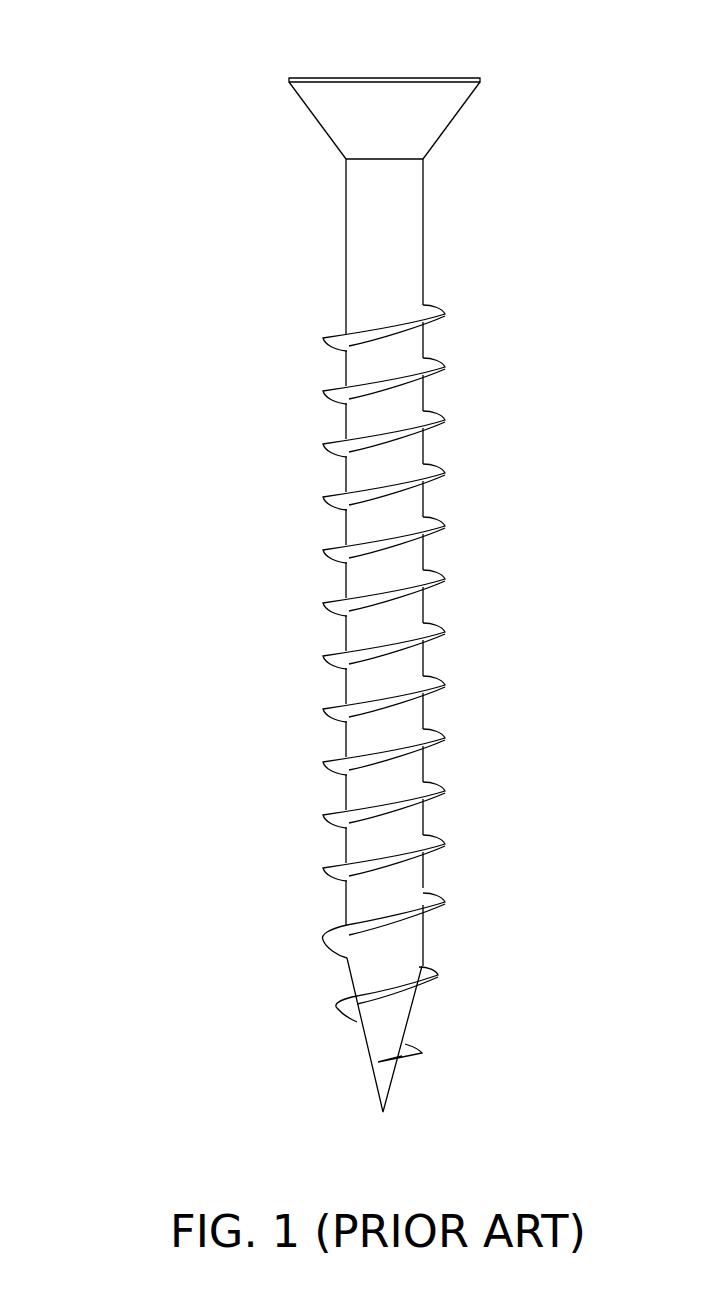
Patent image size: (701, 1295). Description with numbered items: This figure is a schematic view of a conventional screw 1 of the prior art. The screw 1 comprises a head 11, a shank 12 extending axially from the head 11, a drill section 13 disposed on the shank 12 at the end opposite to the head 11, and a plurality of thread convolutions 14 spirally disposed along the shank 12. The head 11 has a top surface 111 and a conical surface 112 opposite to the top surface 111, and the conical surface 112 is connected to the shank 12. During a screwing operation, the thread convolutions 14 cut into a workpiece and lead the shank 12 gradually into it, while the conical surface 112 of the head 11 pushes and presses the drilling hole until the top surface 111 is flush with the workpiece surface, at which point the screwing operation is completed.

The conventional screw 1 is at (145, 152).
The head 11 is at (347, 70).
The top surface 111 is at (415, 78).
The conical surface 112 is at (420, 128).
The shank 12 is at (405, 243).
The drill section 13 is at (363, 1061).
The thread convolutions 14 is at (445, 582).